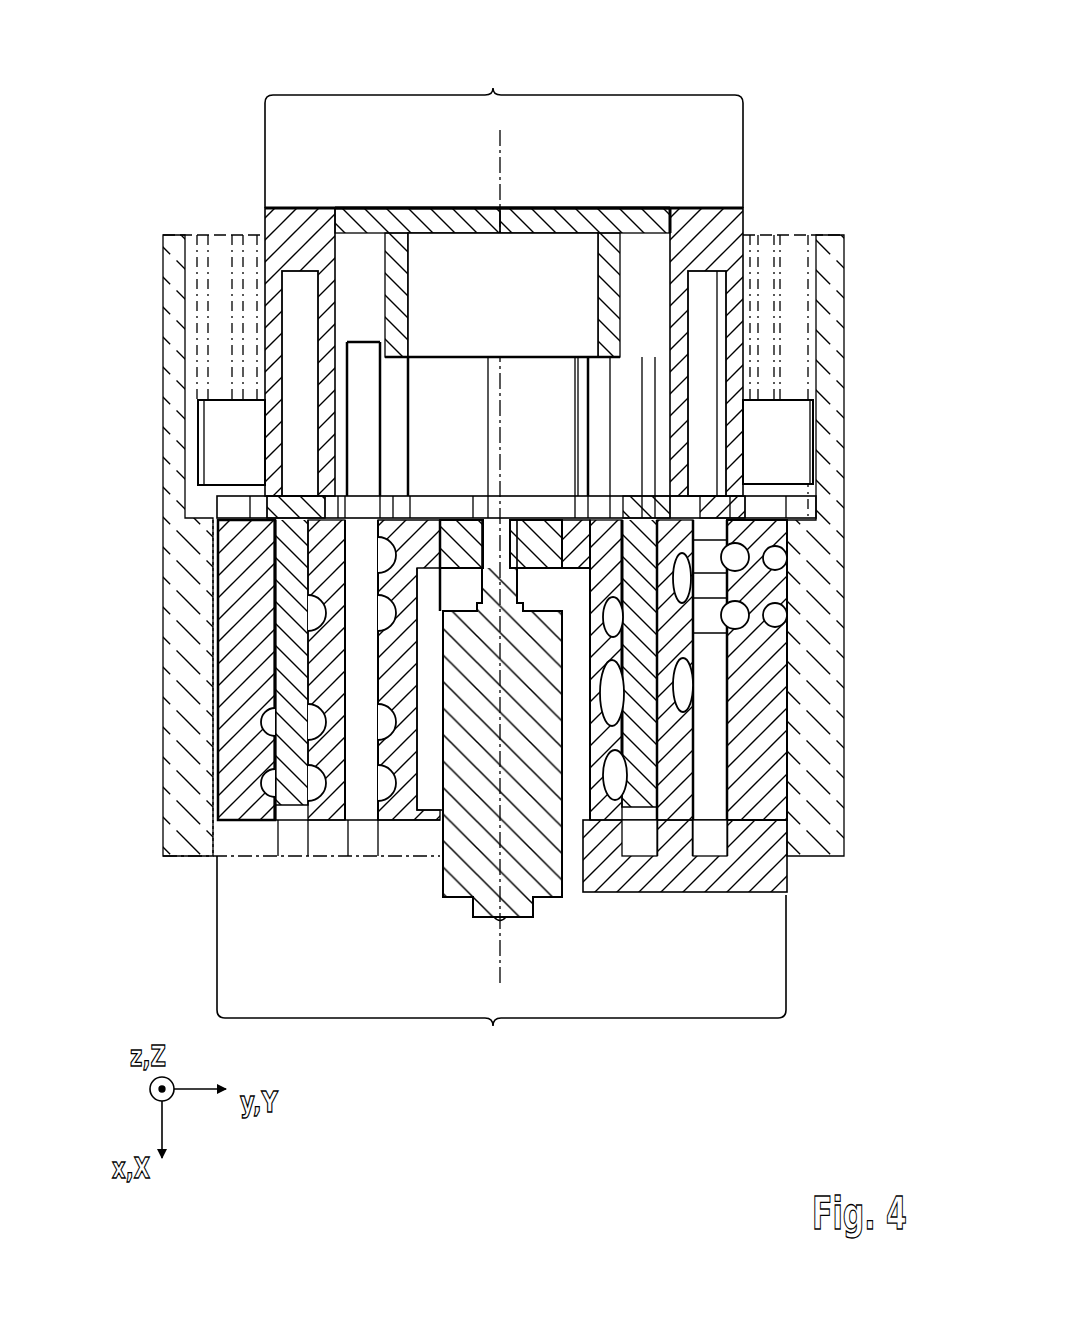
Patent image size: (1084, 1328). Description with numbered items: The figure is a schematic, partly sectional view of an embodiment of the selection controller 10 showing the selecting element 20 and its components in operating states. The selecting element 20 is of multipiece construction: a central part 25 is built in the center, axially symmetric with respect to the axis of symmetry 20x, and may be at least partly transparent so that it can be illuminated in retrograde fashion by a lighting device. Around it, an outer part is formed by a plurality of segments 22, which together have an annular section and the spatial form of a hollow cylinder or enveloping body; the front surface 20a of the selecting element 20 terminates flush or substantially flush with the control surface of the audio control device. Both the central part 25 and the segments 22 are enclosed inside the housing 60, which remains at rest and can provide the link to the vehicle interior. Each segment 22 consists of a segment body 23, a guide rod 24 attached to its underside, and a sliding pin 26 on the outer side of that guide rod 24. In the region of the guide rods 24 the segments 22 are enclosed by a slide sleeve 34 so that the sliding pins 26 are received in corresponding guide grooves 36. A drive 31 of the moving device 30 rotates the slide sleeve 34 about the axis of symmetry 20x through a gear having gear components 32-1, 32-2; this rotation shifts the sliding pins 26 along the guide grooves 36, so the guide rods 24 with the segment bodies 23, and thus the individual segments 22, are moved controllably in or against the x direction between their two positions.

The selection controller 10 is at (148, 86).
The selecting element 20 is at (504, 131).
The front surface 20a is at (547, 207).
The axis of symmetry 20x is at (500, 962).
The segment 22 is at (320, 206).
The segment body 23 is at (303, 228).
The guide rod 24 is at (287, 595).
The central part 25 is at (452, 256).
The sliding pin 26 is at (268, 787).
The moving device 30 is at (501, 961).
The drive 31 is at (477, 820).
The gear component 32-1 is at (443, 545).
The gear component 32-2 is at (590, 560).
The slide sleeve 34 is at (683, 872).
The guide groove 36 is at (312, 678).
The housing 60 is at (828, 253).